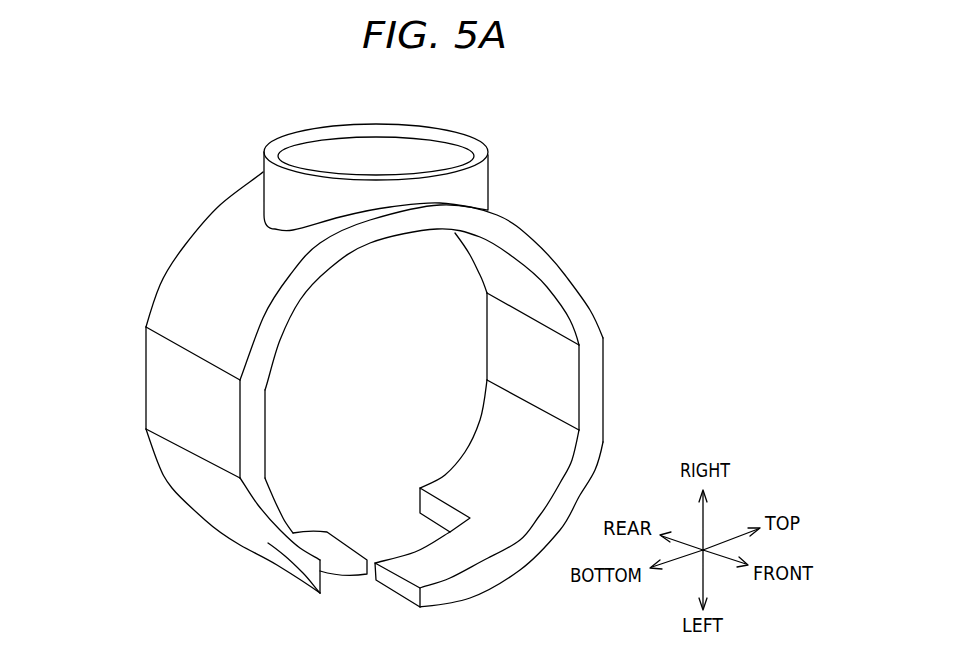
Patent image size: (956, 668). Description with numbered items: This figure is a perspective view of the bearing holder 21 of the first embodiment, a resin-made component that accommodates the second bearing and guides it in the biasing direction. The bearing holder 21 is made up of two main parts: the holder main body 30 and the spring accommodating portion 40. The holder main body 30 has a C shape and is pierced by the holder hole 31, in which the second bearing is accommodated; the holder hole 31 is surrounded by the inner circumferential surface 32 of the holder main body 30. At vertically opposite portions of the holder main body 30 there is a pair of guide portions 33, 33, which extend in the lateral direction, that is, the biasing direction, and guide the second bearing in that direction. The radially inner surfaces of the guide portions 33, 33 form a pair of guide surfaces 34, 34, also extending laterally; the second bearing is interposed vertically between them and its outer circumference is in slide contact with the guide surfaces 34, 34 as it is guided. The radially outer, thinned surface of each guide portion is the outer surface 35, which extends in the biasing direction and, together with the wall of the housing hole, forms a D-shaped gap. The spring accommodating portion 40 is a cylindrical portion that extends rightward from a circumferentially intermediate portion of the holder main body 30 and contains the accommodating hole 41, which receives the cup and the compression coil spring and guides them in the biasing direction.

The bearing holder 21 is at (133, 220).
The holder main body 30 is at (172, 488).
The holder hole 31 is at (413, 420).
The inner circumferential surface 32 is at (513, 475).
The guide portion 33 is at (136, 331).
The guide surface 34 is at (267, 430).
The outer surface 35 is at (183, 420).
The spring accommodating portion 40 is at (277, 195).
The accommodating hole 41 is at (365, 156).